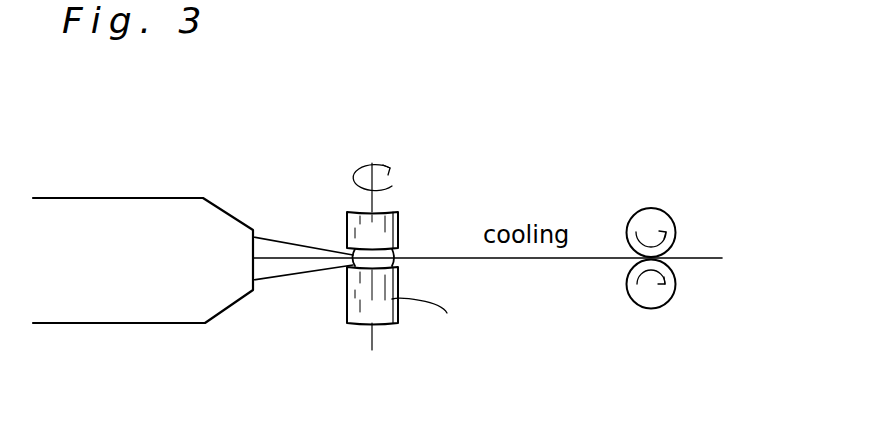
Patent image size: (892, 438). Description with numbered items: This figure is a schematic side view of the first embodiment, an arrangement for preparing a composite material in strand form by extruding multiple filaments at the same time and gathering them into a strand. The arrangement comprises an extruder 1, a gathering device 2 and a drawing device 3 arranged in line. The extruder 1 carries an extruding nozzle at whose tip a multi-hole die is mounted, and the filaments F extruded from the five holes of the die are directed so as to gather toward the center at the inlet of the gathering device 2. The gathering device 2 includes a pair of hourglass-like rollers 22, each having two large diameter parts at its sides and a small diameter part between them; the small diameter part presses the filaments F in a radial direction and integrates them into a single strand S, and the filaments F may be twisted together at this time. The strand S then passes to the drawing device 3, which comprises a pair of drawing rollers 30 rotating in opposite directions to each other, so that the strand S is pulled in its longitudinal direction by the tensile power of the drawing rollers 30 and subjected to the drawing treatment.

The extruder 1 is at (180, 103).
The gathering device 2 is at (405, 218).
The hourglass-like roller 22 is at (447, 322).
The drawing device 3 is at (684, 228).
The drawing roller 30 is at (652, 208).
The filaments F is at (278, 236).
The strand S is at (567, 262).